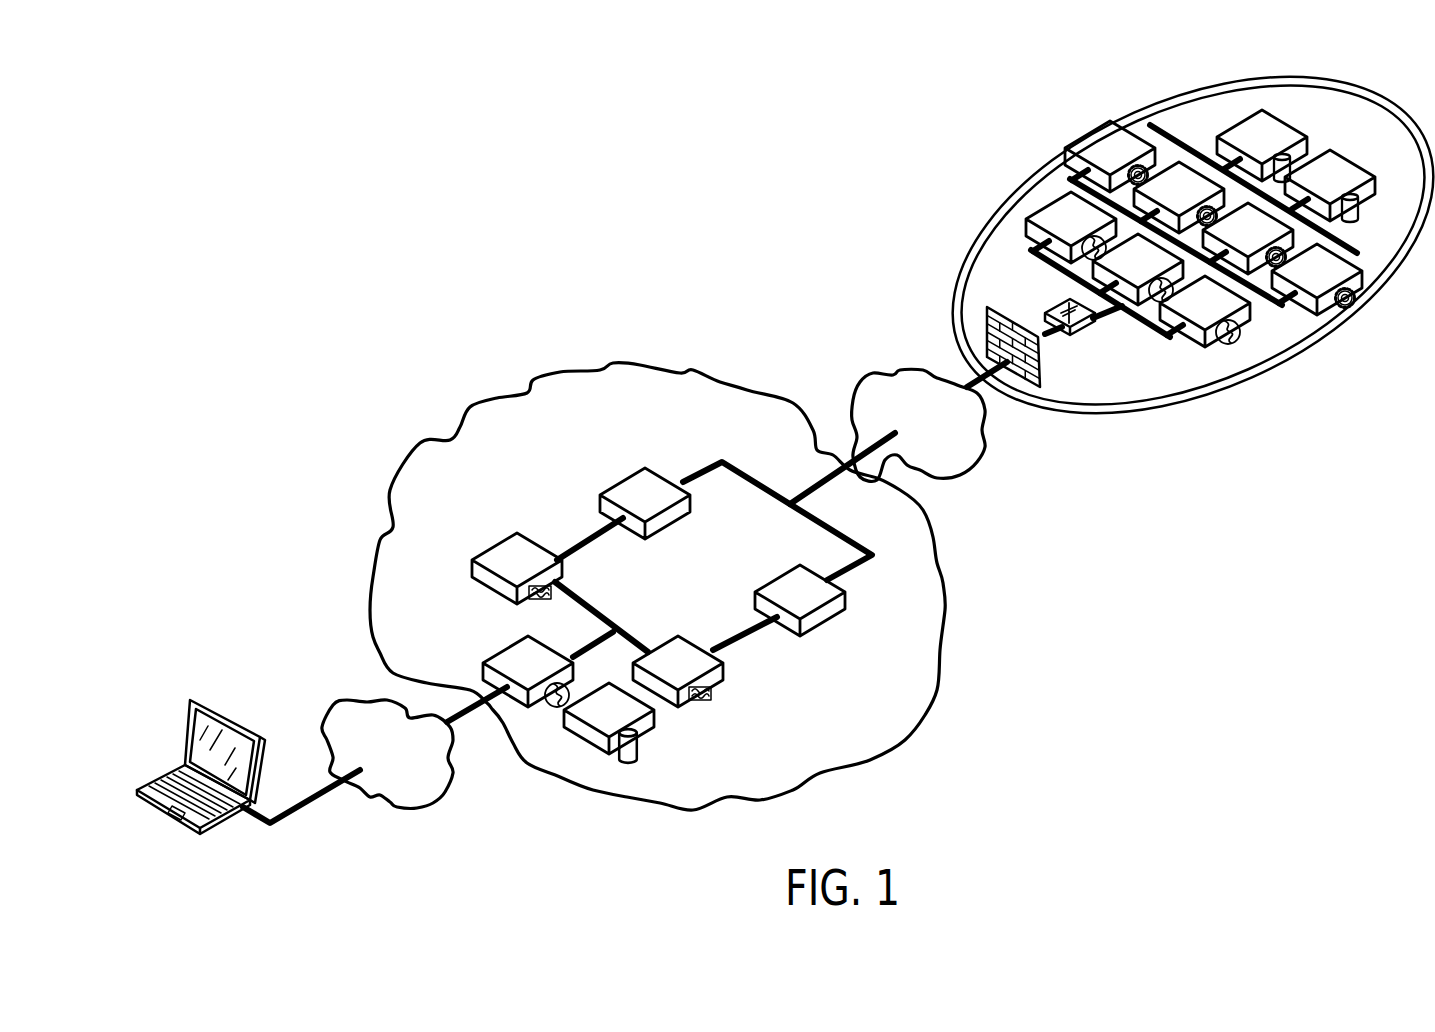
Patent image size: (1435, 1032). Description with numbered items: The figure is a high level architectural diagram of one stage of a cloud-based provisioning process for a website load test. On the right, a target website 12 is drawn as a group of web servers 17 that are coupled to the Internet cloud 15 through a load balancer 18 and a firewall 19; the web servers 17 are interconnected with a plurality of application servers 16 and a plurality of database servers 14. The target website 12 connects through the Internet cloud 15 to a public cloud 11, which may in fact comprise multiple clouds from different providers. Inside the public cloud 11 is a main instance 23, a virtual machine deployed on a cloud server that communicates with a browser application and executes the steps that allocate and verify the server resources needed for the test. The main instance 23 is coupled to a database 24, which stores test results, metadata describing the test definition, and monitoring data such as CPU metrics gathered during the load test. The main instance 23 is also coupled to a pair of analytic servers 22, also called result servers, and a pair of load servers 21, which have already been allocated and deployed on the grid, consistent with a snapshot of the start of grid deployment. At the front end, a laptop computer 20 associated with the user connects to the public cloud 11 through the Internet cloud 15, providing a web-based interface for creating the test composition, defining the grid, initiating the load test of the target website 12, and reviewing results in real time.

The public cloud 11 is at (942, 688).
The target website 12 is at (1227, 424).
The database servers 14 is at (1330, 165).
The Internet cloud 15 is at (345, 700).
The application servers 16 is at (1310, 268).
The web servers 17 is at (1200, 299).
The load balancer 18 is at (1065, 308).
The firewall 19 is at (992, 322).
The laptop computer 20 is at (162, 777).
The load servers 21 is at (795, 590).
The analytic servers 22 is at (672, 655).
The main instance 23 is at (520, 663).
The database 24 is at (614, 713).